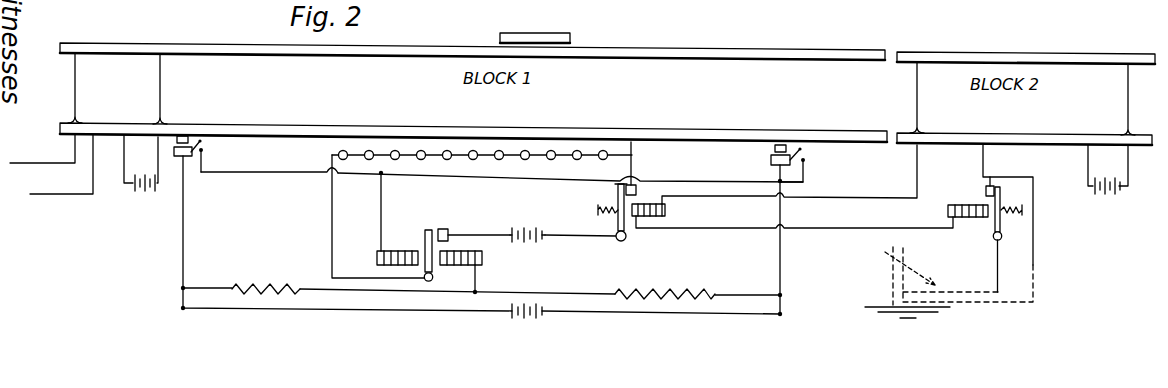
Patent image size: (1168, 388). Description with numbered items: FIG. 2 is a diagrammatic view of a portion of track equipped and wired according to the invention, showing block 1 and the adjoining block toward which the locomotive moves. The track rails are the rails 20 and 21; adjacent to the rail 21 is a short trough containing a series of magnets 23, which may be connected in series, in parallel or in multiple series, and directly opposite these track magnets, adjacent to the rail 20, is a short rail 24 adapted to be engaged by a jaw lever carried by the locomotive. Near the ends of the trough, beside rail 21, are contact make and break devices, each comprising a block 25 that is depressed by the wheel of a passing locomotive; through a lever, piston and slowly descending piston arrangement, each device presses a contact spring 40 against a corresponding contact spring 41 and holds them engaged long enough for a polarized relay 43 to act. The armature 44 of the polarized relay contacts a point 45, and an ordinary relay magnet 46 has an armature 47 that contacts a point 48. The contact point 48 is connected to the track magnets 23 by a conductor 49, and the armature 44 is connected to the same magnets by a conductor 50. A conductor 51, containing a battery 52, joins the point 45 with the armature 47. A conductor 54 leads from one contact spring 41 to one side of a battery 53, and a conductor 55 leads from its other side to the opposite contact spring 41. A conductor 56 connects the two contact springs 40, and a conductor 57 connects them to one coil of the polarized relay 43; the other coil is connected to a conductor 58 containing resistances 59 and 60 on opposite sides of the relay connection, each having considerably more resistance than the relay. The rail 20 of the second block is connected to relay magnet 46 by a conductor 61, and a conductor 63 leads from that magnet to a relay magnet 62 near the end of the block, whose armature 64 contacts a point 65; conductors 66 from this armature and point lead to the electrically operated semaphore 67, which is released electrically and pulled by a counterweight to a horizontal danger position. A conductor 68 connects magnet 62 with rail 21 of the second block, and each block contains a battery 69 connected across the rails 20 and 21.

The block 1 is at (20, 166).
The track rail 20 is at (641, 44).
The track rail 21 is at (518, 128).
The magnets 23 is at (422, 150).
The short rail 24 is at (541, 29).
The block 25 is at (183, 134).
The contact spring 40 is at (203, 150).
The contact spring 41 is at (198, 138).
The polarized relay 43 is at (377, 256).
The armature 44 is at (428, 230).
The point 45 is at (456, 216).
The relay magnet 46 is at (666, 211).
The armature 47 is at (615, 199).
The contact point 48 is at (637, 190).
The conductor 49 is at (633, 130).
The conductor 50 is at (331, 212).
The conductor 51 is at (588, 240).
The battery 52 is at (530, 226).
The battery 53 is at (530, 319).
The conductor 54 is at (182, 255).
The conductor 55 is at (722, 316).
The conductor 56 is at (257, 174).
The conductor 57 is at (381, 206).
The conductor 58 is at (506, 294).
The resistance 59 is at (264, 288).
The resistance 60 is at (672, 293).
The conductor 61 is at (888, 197).
The relay magnet 62 is at (968, 228).
The conductor 63 is at (42, 196).
The armature 64 is at (1002, 230).
The point 65 is at (985, 190).
The conductors 66 is at (1023, 297).
The semaphore 67 is at (928, 266).
The conductor 68 is at (986, 160).
The battery 69 is at (133, 190).